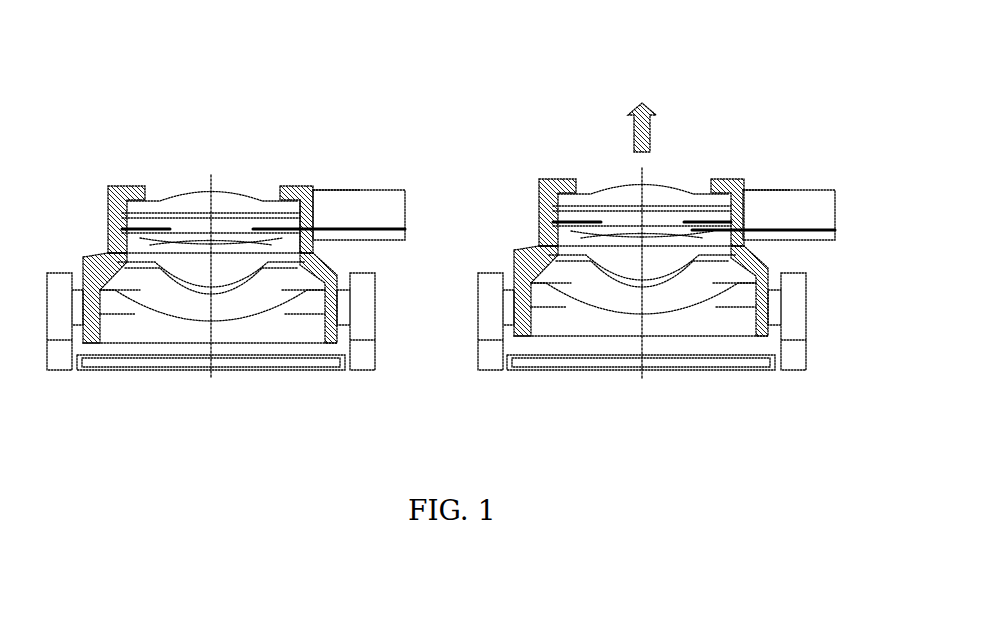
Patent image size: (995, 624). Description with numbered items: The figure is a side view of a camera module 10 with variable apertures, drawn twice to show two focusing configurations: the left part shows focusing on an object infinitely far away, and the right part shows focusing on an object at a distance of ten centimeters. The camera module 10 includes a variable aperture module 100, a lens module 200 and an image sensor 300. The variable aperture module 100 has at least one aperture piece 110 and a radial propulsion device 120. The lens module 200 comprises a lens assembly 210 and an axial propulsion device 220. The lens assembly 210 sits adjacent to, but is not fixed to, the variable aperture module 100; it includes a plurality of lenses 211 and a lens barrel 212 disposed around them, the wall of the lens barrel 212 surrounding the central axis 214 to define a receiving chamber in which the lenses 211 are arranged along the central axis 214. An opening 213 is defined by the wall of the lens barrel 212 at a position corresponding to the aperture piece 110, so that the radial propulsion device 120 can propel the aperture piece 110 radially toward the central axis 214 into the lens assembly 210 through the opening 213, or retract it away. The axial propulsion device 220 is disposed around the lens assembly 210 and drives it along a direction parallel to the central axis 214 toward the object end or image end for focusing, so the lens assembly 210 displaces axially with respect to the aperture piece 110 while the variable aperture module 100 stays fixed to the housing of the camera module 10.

The camera module 10 is at (64, 74).
The variable aperture module 100 is at (292, 97).
The aperture piece 110 is at (390, 223).
The radial propulsion device 120 is at (350, 200).
The lens module 200 is at (530, 125).
The lens assembly 210 is at (112, 200).
The lens 211 is at (198, 193).
The lens barrel 212 is at (300, 193).
The opening 213 is at (305, 231).
The central axis 214 is at (211, 372).
The axial propulsion device 220 is at (357, 325).
The image sensor 300 is at (102, 372).